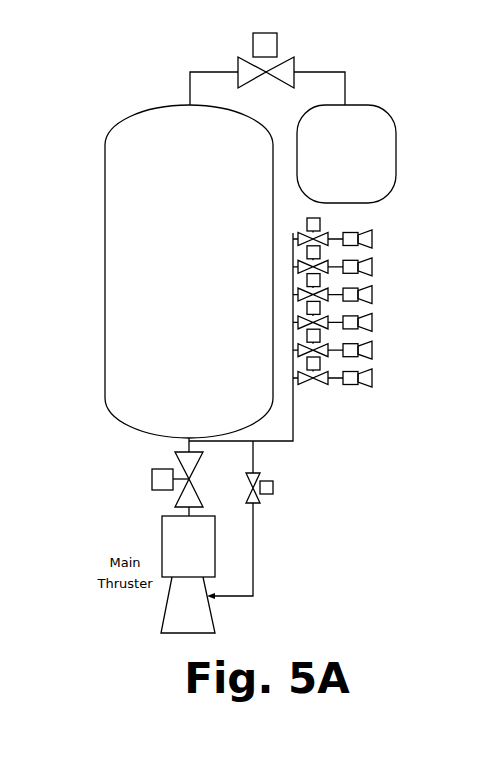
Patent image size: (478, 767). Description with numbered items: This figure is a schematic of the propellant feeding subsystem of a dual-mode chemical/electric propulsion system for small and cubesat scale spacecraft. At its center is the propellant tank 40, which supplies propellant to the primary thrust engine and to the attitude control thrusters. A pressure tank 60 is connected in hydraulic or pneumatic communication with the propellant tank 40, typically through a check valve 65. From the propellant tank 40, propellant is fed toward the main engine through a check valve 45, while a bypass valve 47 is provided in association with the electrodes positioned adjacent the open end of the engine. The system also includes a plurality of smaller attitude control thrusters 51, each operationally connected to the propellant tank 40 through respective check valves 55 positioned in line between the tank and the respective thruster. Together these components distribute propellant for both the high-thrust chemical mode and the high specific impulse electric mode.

The check valve 65 is at (284, 54).
The pressure tank 60 is at (339, 192).
The propellant tank 40 is at (165, 338).
The attitude control thrusters 51 is at (407, 308).
The check valves 55 is at (328, 399).
The check valve 45 is at (161, 500).
The bypass valve 47 is at (270, 504).